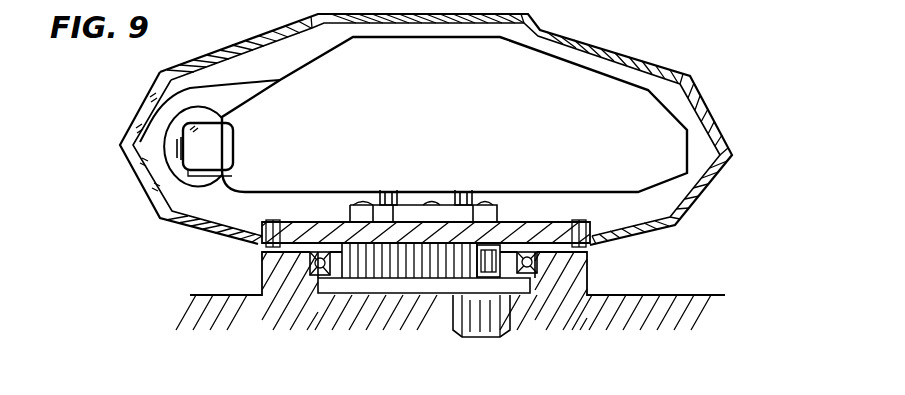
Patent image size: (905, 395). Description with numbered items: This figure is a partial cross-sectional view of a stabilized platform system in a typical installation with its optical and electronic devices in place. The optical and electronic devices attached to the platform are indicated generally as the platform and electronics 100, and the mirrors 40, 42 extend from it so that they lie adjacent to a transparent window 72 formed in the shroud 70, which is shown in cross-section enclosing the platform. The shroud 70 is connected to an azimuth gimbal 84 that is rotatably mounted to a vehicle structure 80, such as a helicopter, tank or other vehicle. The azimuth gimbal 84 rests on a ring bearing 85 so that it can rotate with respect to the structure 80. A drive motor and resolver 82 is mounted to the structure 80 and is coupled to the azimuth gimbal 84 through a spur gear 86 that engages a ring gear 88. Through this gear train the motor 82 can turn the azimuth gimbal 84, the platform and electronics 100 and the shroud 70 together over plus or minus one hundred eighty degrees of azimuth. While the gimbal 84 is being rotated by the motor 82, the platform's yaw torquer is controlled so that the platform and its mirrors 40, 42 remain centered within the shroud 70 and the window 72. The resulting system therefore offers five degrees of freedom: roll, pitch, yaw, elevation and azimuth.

The mirror 40 is at (178, 165).
The mirror 42 is at (214, 159).
The shroud 70 is at (645, 54).
The transparent window 72 is at (153, 197).
The vehicle structure 80 is at (693, 295).
The drive motor and resolver 82 is at (485, 318).
The azimuth gimbal 84 is at (560, 223).
The ring bearing 85 is at (325, 276).
The spur gear 86 is at (487, 247).
The ring gear 88 is at (417, 263).
The platform and electronics 100 is at (601, 142).